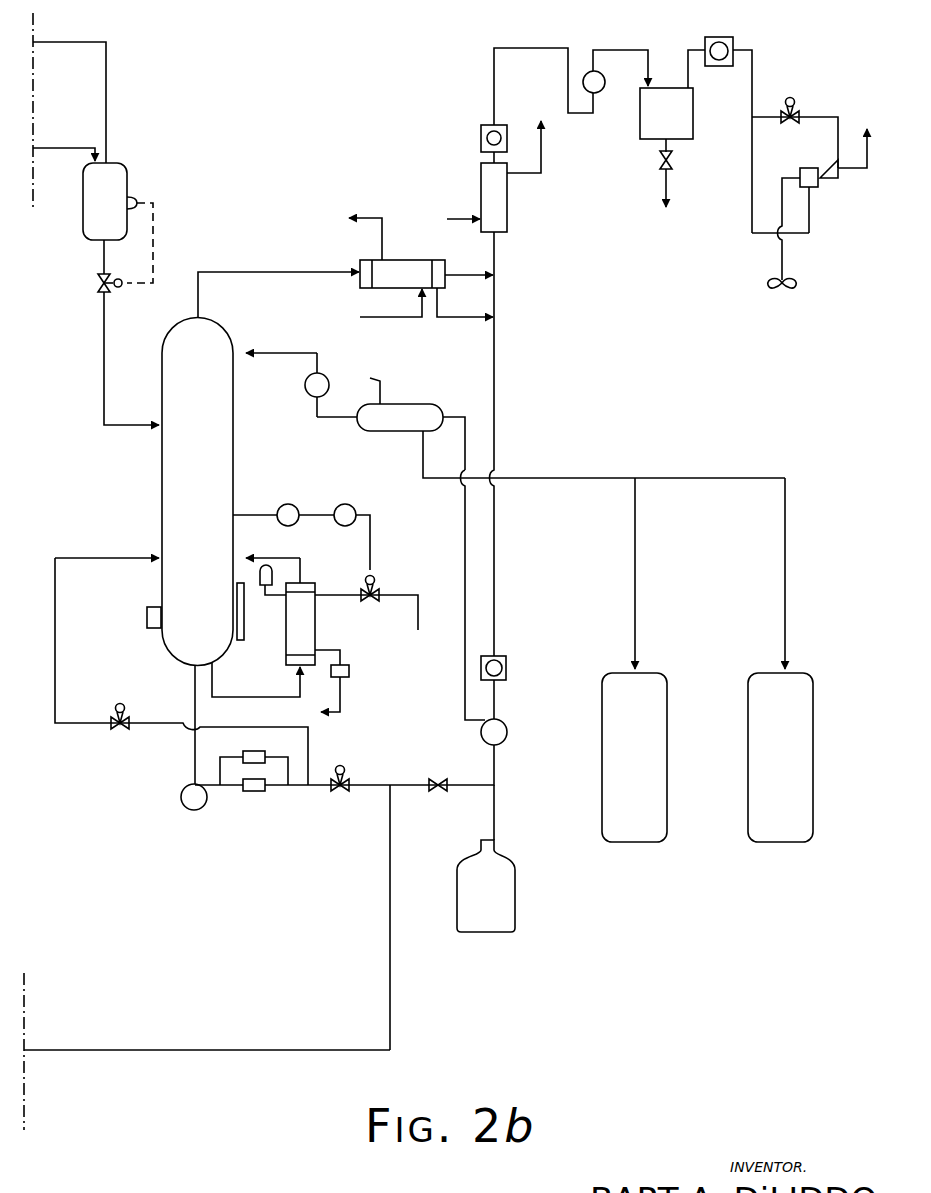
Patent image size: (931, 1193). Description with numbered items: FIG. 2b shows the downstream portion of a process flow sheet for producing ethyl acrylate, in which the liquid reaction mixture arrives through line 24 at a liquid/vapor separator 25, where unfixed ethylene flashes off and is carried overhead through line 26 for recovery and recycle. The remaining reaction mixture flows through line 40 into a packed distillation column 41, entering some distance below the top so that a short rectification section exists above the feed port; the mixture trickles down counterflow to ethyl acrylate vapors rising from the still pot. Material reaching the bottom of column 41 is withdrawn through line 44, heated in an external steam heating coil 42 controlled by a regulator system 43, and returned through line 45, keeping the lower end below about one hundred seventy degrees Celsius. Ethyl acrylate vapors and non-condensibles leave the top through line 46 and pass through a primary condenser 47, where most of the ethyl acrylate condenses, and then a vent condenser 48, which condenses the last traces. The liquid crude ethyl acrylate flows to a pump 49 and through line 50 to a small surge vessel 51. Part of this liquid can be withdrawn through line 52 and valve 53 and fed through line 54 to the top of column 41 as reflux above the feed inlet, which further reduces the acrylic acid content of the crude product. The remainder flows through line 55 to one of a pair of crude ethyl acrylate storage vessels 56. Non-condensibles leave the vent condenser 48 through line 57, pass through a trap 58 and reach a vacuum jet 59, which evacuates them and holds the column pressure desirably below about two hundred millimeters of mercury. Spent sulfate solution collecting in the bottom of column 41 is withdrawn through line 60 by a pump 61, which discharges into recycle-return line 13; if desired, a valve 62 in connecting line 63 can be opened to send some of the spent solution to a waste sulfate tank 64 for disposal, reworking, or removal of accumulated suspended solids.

The recycle-return line 13 is at (138, 1050).
The line 24 is at (50, 122).
The liquid/vapor separator 25 is at (83, 234).
The line 26 is at (86, 42).
The line 40 is at (103, 332).
The packed distillation column 41 is at (161, 461).
The external steam heating coil 42 is at (316, 626).
The regulator system 43 is at (376, 526).
The line 44 is at (282, 697).
The line 45 is at (292, 558).
The line 46 is at (228, 272).
The primary condenser 47 is at (400, 260).
The vent condenser 48 is at (508, 222).
The pump 49 is at (507, 730).
The line 50 is at (465, 543).
The small surge vessel 51 is at (412, 404).
The line 52 is at (330, 418).
The valve 53 is at (305, 389).
The line 54 is at (286, 333).
The line 55 is at (568, 478).
The crude ethyl acrylate storage vessels 56 is at (648, 673).
The line 57 is at (494, 88).
The trap 58 is at (648, 140).
The vacuum jet 59 is at (818, 187).
The line 60 is at (191, 750).
The pump 61 is at (194, 810).
The valve 62 is at (430, 785).
The connecting line 63 is at (494, 808).
The waste sulfate tank 64 is at (516, 888).